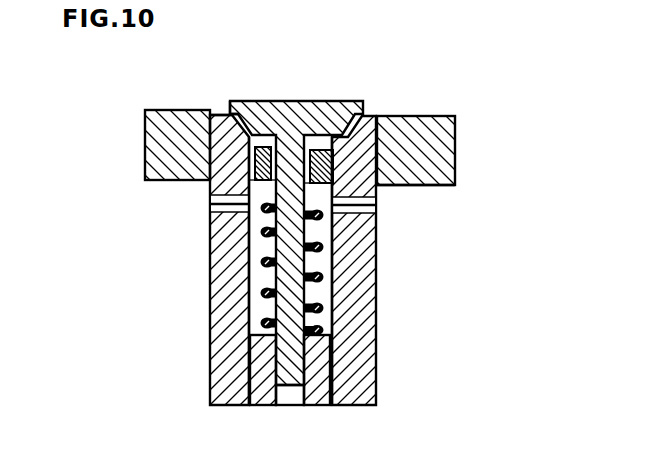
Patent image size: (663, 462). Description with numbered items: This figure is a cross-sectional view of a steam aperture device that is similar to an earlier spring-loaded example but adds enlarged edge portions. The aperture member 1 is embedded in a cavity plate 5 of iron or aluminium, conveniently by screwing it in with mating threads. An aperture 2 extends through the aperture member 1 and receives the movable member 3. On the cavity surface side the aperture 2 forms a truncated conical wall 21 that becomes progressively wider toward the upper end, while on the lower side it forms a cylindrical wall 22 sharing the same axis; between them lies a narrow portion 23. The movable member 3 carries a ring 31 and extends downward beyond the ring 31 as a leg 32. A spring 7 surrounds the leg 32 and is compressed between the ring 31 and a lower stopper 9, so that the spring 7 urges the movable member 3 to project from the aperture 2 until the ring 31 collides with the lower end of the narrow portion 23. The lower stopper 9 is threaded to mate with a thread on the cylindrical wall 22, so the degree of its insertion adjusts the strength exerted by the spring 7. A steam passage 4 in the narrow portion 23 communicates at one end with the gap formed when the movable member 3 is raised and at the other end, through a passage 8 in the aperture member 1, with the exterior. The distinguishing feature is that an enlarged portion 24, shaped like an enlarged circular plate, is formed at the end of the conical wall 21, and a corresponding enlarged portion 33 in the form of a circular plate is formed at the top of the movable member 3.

The aperture member 1 is at (357, 333).
The aperture 2 is at (258, 313).
The movable member 3 is at (291, 118).
The steam passage 4 is at (333, 172).
The cavity plate 5 is at (437, 177).
The spring 7 is at (250, 242).
The passage 8 is at (210, 207).
The lower stopper 9 is at (258, 382).
The truncated conical wall 21 is at (210, 167).
The cylindrical wall 22 is at (396, 117).
The narrow portion 23 is at (255, 273).
The enlarged portion 24 is at (230, 112).
The ring 31 is at (338, 205).
The leg 32 is at (288, 367).
The enlarged portion 33 is at (235, 100).